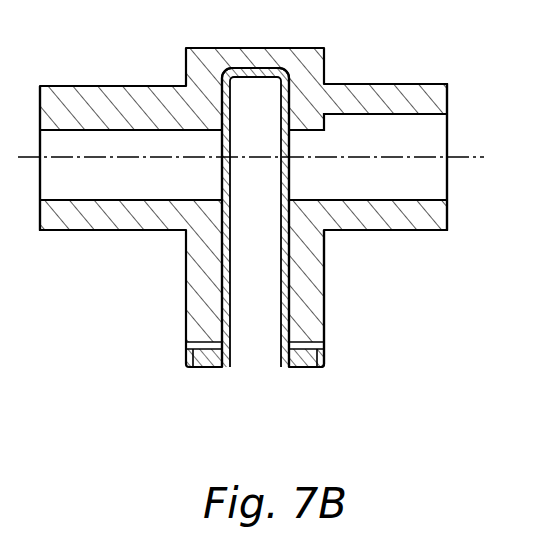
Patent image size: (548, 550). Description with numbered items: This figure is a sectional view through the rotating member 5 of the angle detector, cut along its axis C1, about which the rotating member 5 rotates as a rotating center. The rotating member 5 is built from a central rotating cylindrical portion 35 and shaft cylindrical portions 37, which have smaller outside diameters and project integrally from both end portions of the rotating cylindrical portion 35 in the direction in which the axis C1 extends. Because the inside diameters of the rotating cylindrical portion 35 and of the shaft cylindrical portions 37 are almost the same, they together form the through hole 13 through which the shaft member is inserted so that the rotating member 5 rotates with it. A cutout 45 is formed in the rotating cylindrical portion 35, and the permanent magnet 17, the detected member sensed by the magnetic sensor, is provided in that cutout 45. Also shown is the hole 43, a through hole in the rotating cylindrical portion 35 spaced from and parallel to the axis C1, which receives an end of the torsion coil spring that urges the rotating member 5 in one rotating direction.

The rotating member 5 is at (371, 83).
The shaft cylindrical portions 37 is at (86, 82).
The through hole 13 is at (76, 187).
The axis C1 is at (471, 153).
The cutout 45 is at (238, 288).
The detected member (permanent magnet) 17 is at (282, 318).
The rotating cylindrical portion 35 is at (322, 297).
The hole 43 is at (195, 368).